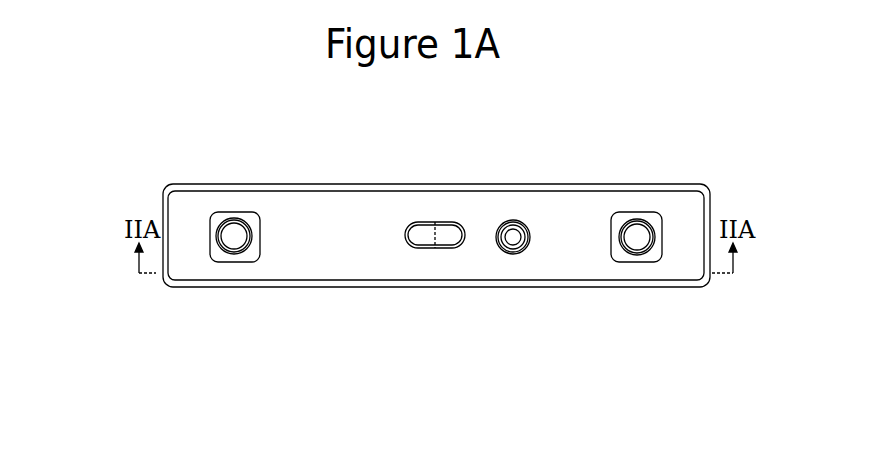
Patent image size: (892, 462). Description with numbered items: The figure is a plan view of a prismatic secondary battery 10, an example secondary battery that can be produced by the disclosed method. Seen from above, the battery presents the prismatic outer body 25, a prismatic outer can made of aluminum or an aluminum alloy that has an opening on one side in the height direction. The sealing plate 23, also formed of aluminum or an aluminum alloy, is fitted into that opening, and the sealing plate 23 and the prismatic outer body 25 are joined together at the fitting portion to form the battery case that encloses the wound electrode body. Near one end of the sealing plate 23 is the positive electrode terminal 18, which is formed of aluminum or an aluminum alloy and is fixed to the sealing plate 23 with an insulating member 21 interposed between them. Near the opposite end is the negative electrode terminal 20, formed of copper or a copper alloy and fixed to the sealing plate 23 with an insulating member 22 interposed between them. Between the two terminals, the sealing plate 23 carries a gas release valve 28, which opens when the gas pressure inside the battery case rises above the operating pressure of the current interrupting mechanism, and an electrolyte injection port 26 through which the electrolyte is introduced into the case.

The prismatic secondary battery 10 is at (427, 99).
The positive electrode terminal 18 is at (637, 232).
The negative electrode terminal 20 is at (233, 232).
The insulating member 21 is at (653, 255).
The insulating member 22 is at (250, 253).
The sealing plate 23 is at (348, 208).
The prismatic outer body 25 is at (423, 285).
The electrolyte injection port 26 is at (513, 245).
The gas release valve 28 is at (447, 230).